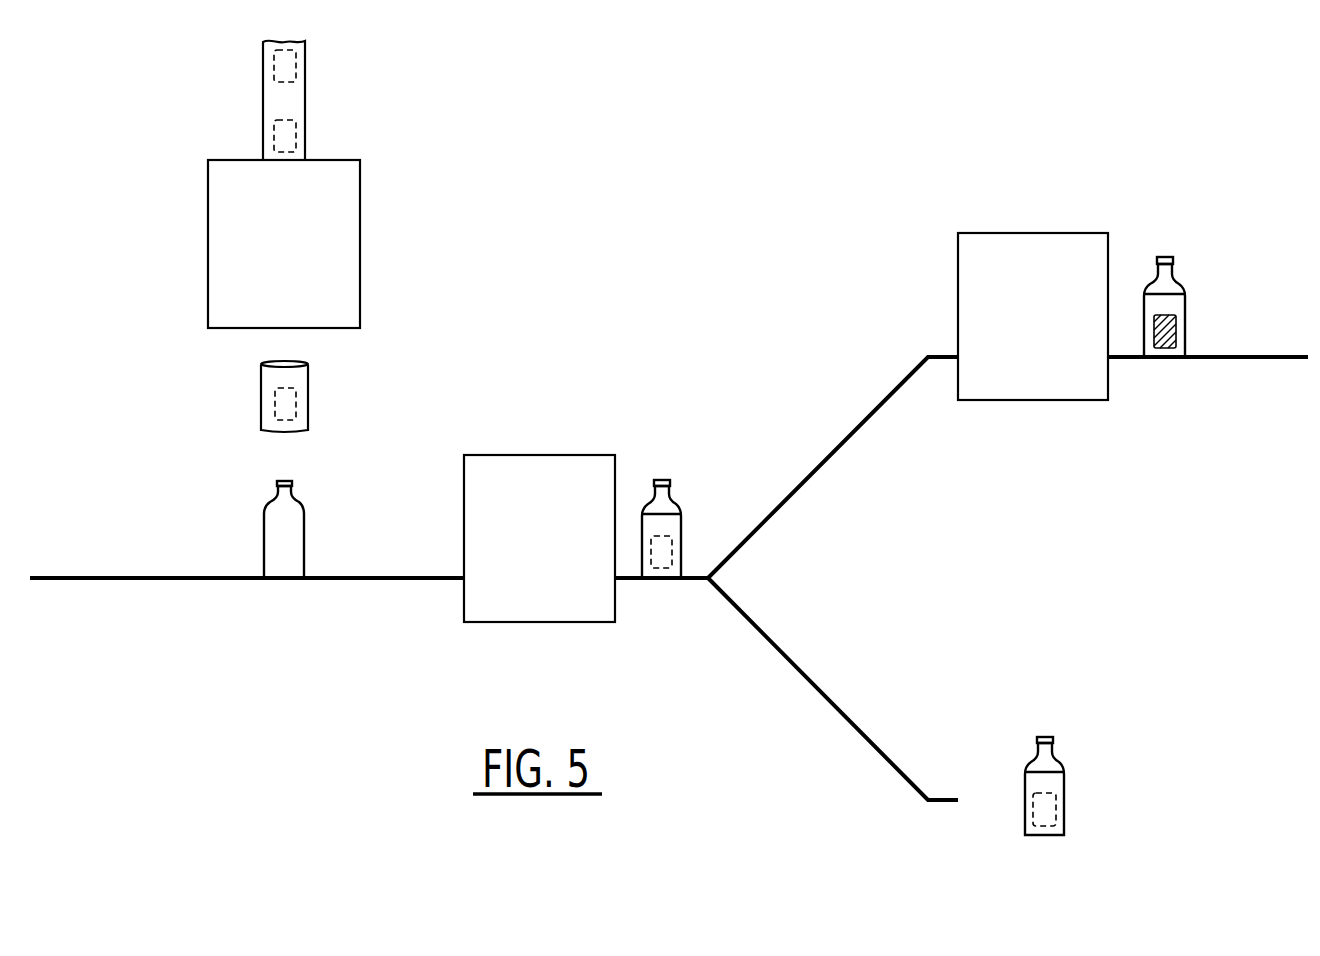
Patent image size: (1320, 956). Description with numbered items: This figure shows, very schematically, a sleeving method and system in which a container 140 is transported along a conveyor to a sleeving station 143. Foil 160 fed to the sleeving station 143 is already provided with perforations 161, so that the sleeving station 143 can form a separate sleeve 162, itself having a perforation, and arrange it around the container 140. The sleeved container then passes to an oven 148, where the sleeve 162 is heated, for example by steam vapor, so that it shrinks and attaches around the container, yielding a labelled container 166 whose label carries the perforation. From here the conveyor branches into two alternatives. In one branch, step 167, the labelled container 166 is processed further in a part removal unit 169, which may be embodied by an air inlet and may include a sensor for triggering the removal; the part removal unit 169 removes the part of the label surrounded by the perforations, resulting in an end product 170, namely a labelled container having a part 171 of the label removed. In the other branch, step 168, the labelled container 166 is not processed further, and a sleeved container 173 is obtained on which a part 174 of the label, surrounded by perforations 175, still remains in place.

The container 140 is at (292, 538).
The sleeving station 143 is at (284, 244).
The oven 148 is at (539, 538).
The foil 160 is at (304, 108).
The perforations 161 is at (291, 72).
The sleeve 162 is at (304, 395).
The labelled container 166 is at (670, 468).
The step 167 is at (846, 445).
The step 168 is at (800, 668).
The part removal unit 169 is at (1033, 316).
The end product 170 is at (1168, 248).
The part 171 is at (1163, 340).
The sleeved container 173 is at (1072, 723).
The part 174 is at (1047, 802).
The perforations 175 is at (1058, 827).